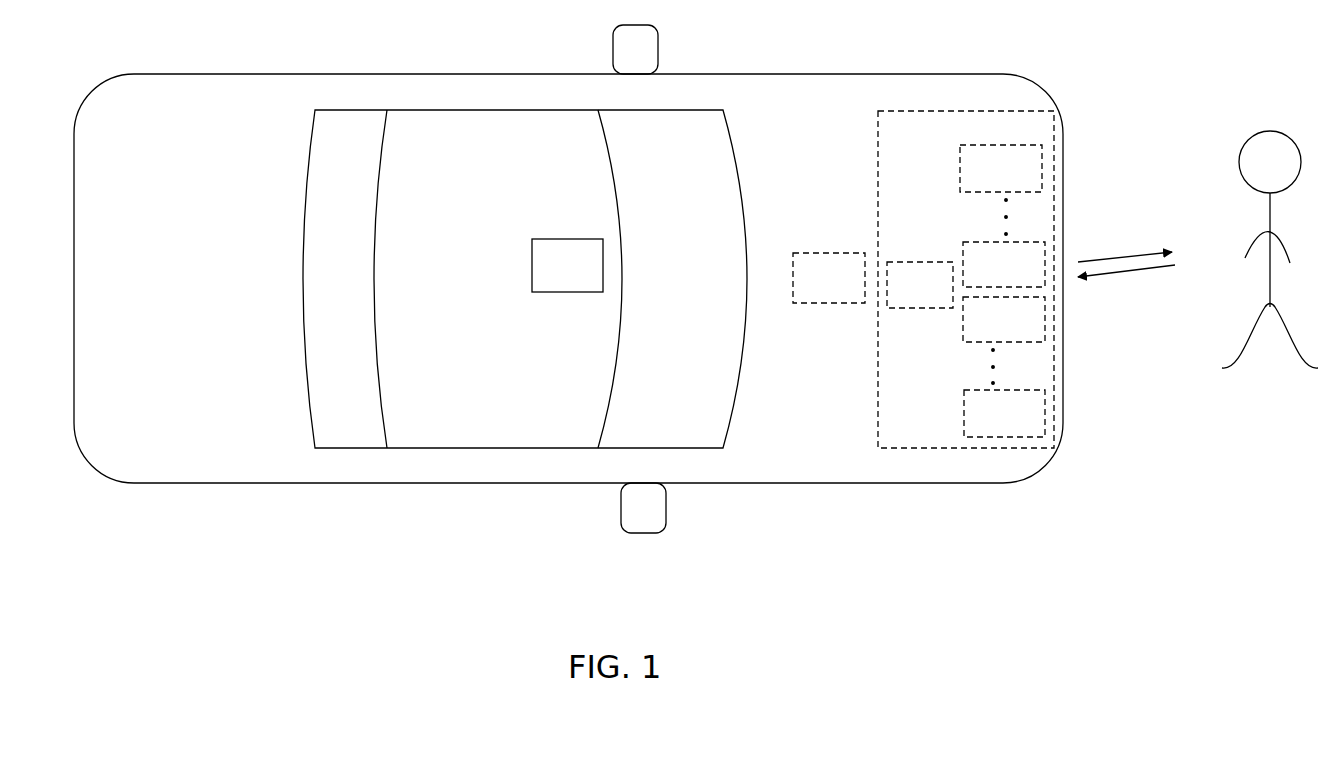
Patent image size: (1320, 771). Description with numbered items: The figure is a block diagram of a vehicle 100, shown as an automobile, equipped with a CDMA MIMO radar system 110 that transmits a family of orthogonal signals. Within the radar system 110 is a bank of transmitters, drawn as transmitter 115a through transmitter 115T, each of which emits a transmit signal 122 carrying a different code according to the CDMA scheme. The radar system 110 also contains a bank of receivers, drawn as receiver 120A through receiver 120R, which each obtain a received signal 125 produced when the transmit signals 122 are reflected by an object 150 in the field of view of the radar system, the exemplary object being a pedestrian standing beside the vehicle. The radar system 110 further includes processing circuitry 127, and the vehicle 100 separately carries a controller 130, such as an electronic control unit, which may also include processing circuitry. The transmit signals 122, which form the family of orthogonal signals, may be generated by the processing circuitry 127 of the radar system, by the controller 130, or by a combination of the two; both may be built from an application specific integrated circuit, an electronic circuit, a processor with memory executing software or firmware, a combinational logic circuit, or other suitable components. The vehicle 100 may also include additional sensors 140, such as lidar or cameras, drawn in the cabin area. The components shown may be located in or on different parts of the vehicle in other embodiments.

The vehicle 100 is at (302, 75).
The CDMA MIMO radar system 110 is at (941, 148).
The transmitter 115a is at (1031, 183).
The transmitter 115T is at (1035, 278).
The receiver 120A is at (1036, 333).
The receiver 120R is at (1036, 428).
The transmit signal 122 is at (1128, 257).
The received signal 125 is at (1127, 274).
The processing circuitry 127 is at (943, 299).
The controller 130 is at (851, 292).
The additional sensors 140 is at (590, 278).
The object 150 is at (1245, 110).